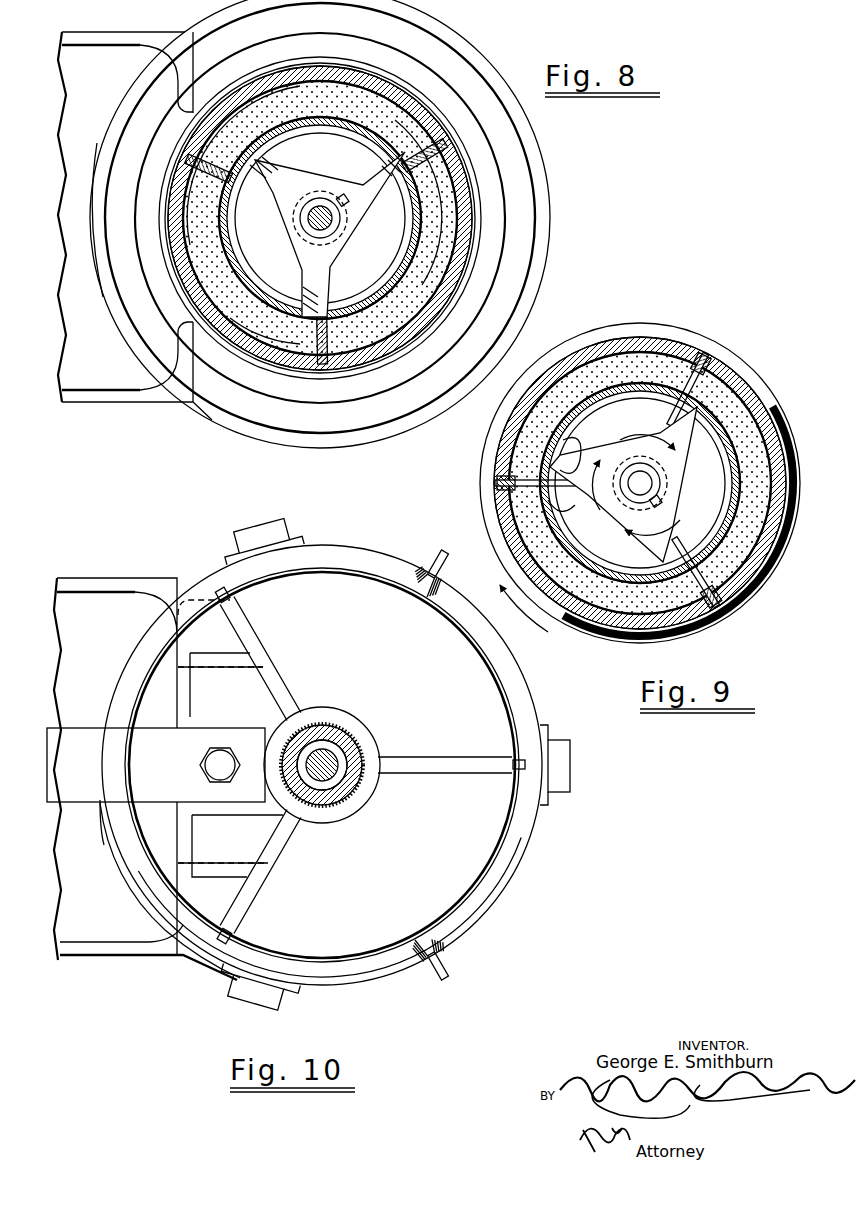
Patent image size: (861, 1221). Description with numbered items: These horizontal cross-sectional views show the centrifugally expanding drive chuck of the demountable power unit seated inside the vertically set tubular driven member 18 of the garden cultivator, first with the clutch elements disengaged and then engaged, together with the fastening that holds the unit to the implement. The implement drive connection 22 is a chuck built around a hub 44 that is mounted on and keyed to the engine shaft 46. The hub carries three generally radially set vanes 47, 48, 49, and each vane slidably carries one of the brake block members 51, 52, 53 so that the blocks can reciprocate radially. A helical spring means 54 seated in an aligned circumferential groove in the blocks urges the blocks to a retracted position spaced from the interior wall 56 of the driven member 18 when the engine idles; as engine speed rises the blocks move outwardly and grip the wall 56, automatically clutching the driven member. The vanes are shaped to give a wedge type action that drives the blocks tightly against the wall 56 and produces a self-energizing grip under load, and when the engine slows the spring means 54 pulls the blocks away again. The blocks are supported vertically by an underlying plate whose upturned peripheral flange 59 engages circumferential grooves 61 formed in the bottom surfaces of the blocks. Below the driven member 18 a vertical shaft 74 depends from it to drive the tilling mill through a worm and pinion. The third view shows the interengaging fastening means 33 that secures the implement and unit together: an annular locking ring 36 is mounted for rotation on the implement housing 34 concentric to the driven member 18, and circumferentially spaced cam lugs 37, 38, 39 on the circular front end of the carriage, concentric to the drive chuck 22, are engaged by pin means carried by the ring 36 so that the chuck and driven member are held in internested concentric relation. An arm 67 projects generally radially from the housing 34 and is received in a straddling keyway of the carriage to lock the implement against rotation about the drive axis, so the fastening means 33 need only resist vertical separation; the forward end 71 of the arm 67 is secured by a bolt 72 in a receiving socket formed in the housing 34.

In FIG. 8, the tubular driven member 18 is at (465, 175).
In FIG. 9, the tubular driven member 18 is at (497, 452).
In FIG. 8, the implement drive connection 22 is at (368, 90).
In FIG. 9, the implement drive connection 22 is at (642, 340).
In FIG. 10, the interengaging fastening means 33 is at (469, 951).
In FIG. 10, the implement housing 34 is at (486, 836).
In FIG. 10, the annular locking ring 36 is at (506, 880).
In FIG. 10, the cam lug 37 is at (290, 1010).
In FIG. 10, the cam lug 38 is at (561, 735).
In FIG. 10, the cam lug 39 is at (290, 520).
In FIG. 8, the hub 44 is at (300, 220).
In FIG. 9, the hub 44 is at (631, 512).
In FIG. 8, the engine shaft 46 is at (385, 330).
In FIG. 9, the engine shaft 46 is at (633, 477).
In FIG. 8, the vane 47 is at (368, 199).
In FIG. 8, the vane 48 is at (298, 294).
In FIG. 8, the vane 49 is at (255, 184).
In FIG. 8, the brake block member 51 is at (334, 95).
In FIG. 9, the brake block member 51 is at (640, 483).
In FIG. 8, the brake block member 52 is at (423, 272).
In FIG. 8, the brake block member 53 is at (268, 316).
In FIG. 8, the spring means 54 is at (427, 157).
In FIG. 9, the spring means 54 is at (701, 372).
In FIG. 8, the interior wall 56 is at (290, 85).
In FIG. 8, the upturned peripheral flange 59 is at (385, 140).
In FIG. 9, the upturned peripheral flange 59 is at (553, 447).
In FIG. 8, the circumferential groove 61 is at (400, 244).
In FIG. 9, the circumferential groove 61 is at (560, 468).
In FIG. 10, the arm 67 is at (79, 798).
In FIG. 10, the forward end of arm 71 is at (188, 795).
In FIG. 10, the bolt 72 is at (224, 792).
In FIG. 10, the vertical shaft 74 is at (346, 745).